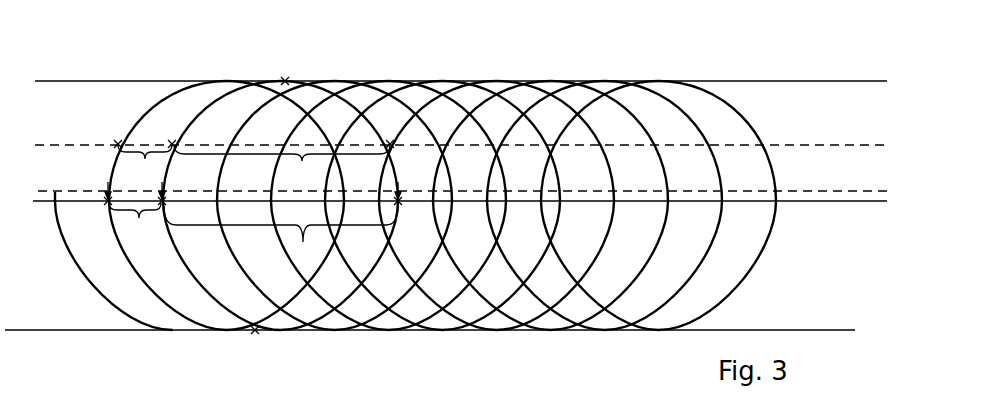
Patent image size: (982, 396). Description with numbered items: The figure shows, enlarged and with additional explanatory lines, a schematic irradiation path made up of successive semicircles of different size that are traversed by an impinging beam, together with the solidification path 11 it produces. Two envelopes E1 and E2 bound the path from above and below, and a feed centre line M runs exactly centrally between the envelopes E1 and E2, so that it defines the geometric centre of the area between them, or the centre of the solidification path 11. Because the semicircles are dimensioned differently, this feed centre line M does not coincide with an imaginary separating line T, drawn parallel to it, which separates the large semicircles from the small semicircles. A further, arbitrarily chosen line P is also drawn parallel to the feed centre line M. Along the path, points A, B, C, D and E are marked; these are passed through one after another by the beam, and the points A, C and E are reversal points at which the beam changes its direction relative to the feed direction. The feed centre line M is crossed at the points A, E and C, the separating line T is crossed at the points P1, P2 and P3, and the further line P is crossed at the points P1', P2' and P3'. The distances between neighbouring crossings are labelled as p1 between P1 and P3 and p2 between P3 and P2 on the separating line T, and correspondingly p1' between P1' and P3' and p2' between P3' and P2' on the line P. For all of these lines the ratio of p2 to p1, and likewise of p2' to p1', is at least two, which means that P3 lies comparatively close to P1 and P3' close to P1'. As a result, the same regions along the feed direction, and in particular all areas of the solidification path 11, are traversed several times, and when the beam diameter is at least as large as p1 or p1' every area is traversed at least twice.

The solidification path 11 is at (866, 128).
The envelope E1 is at (128, 78).
The envelope E2 is at (135, 337).
The further parallel line P is at (838, 141).
The separating line T is at (830, 193).
The feed centre line M is at (851, 193).
The point D is at (285, 71).
The point B is at (255, 340).
The point A is at (99, 185).
The point E is at (171, 185).
The point C is at (405, 181).
The crossing point P1 is at (100, 213).
The crossing point P3 is at (176, 213).
The crossing point P2 is at (409, 210).
The crossing point P1' is at (106, 135).
The crossing point P3' is at (189, 136).
The crossing point P2' is at (407, 136).
The first crossing distance p1 is at (135, 223).
The second crossing distance p2 is at (281, 235).
The first crossing distance on line P p1' is at (145, 166).
The second crossing distance on line P p2' is at (282, 166).